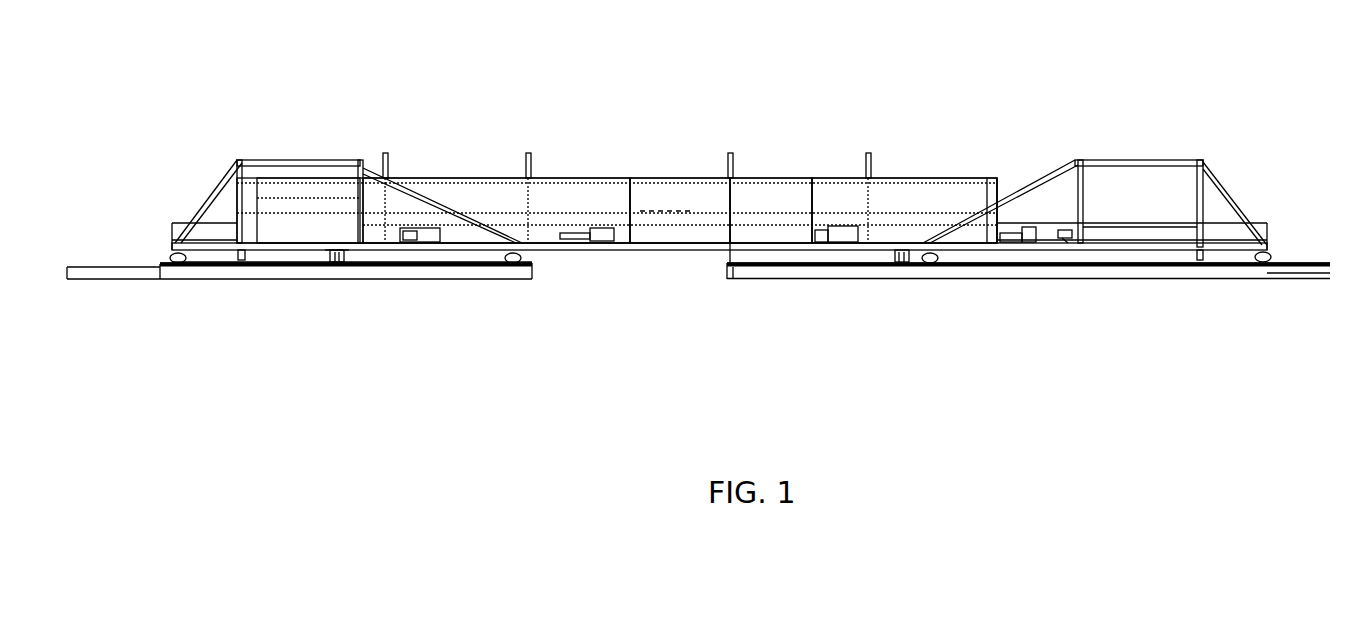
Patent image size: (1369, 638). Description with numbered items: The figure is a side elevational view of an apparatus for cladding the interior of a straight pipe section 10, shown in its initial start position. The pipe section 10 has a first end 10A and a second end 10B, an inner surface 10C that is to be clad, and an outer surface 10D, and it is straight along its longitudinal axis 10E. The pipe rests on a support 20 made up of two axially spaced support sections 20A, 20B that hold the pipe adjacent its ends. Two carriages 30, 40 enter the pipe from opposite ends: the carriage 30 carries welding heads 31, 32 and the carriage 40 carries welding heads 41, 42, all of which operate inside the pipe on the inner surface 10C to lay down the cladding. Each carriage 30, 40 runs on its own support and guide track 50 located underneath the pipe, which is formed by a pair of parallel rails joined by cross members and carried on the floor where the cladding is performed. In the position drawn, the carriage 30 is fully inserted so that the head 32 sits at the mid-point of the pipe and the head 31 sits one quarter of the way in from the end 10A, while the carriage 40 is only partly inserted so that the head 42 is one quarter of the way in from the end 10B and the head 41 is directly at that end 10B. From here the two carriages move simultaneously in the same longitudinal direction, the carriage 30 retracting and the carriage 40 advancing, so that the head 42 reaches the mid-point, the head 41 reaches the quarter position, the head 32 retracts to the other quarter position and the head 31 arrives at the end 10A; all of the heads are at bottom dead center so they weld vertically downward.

The pipe section 10 is at (633, 173).
The end of pipe section 10A is at (260, 197).
The end of pipe section 10B is at (997, 193).
The inner surface 10C is at (767, 183).
The outer surface 10D is at (492, 177).
The longitudinal axis 10E is at (680, 213).
The support 20 is at (327, 268).
The support section 20A is at (363, 277).
The support section 20B is at (902, 267).
The carriage 30 is at (437, 73).
The welding head 31 is at (412, 222).
The welding head 32 is at (603, 237).
The carriage 40 is at (1107, 123).
The welding head 41 is at (1030, 227).
The welding head 42 is at (840, 227).
The support and guide track 50 is at (493, 283).